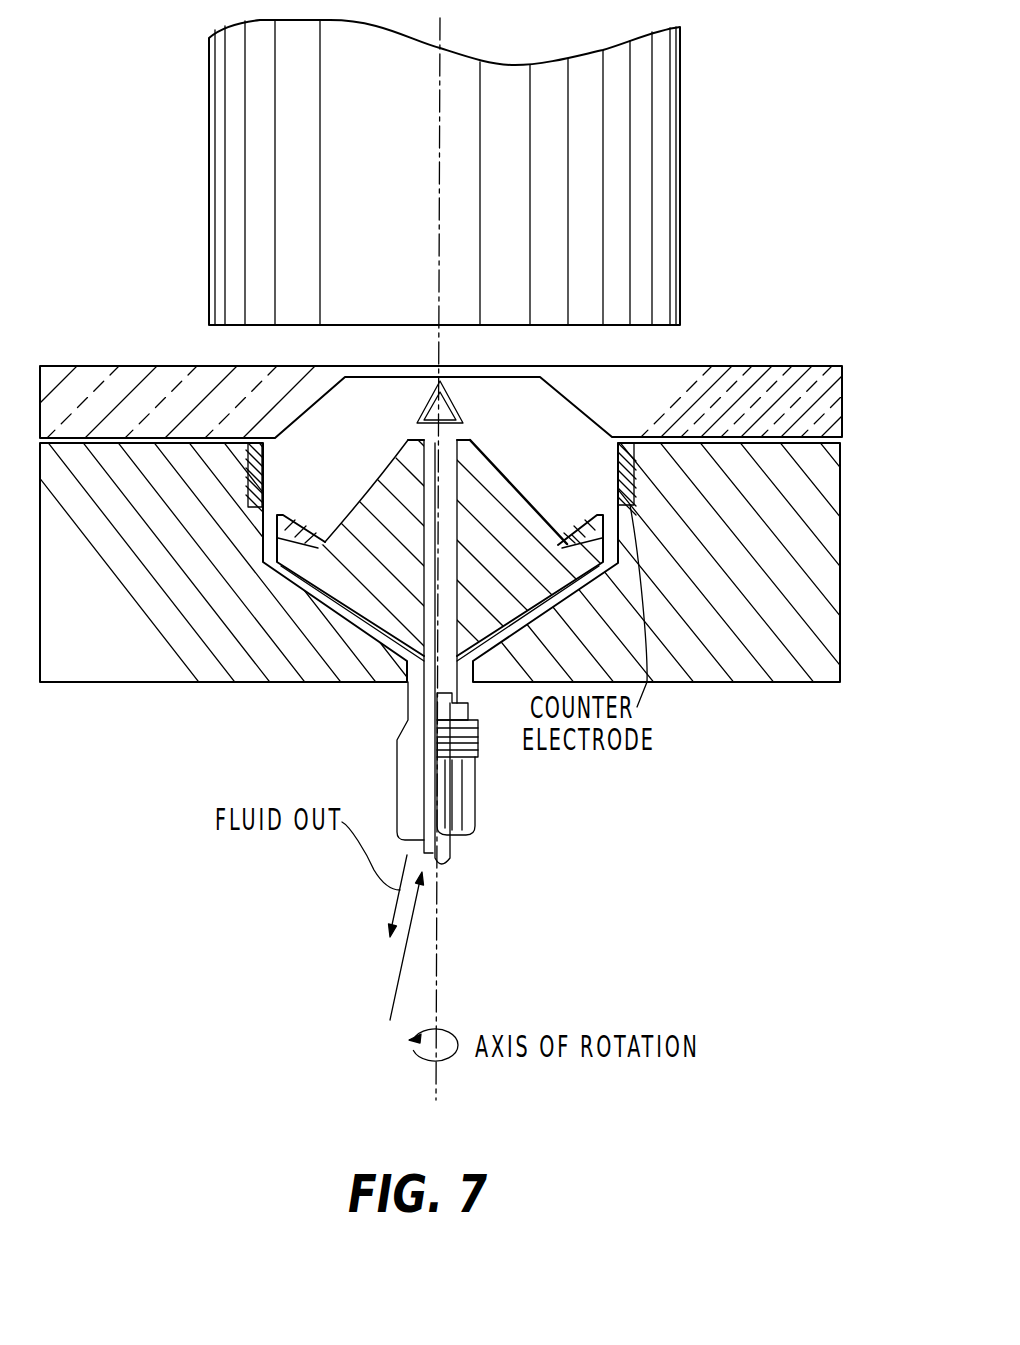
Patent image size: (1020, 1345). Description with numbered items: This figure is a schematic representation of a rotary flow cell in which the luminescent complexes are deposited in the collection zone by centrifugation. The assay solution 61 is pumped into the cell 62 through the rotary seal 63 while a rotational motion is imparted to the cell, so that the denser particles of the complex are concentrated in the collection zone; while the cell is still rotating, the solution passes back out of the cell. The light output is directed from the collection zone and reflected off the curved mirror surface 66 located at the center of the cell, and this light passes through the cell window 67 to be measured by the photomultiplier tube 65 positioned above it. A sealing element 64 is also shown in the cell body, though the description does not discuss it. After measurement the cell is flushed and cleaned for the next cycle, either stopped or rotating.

The assay solution 61 is at (392, 1013).
The cell 62 is at (572, 490).
The rotary seal 63 is at (478, 757).
The seal 64 is at (263, 483).
The photomultiplier tube 65 is at (657, 208).
The curved mirror surface 66 is at (497, 460).
The cell window 67 is at (192, 365).